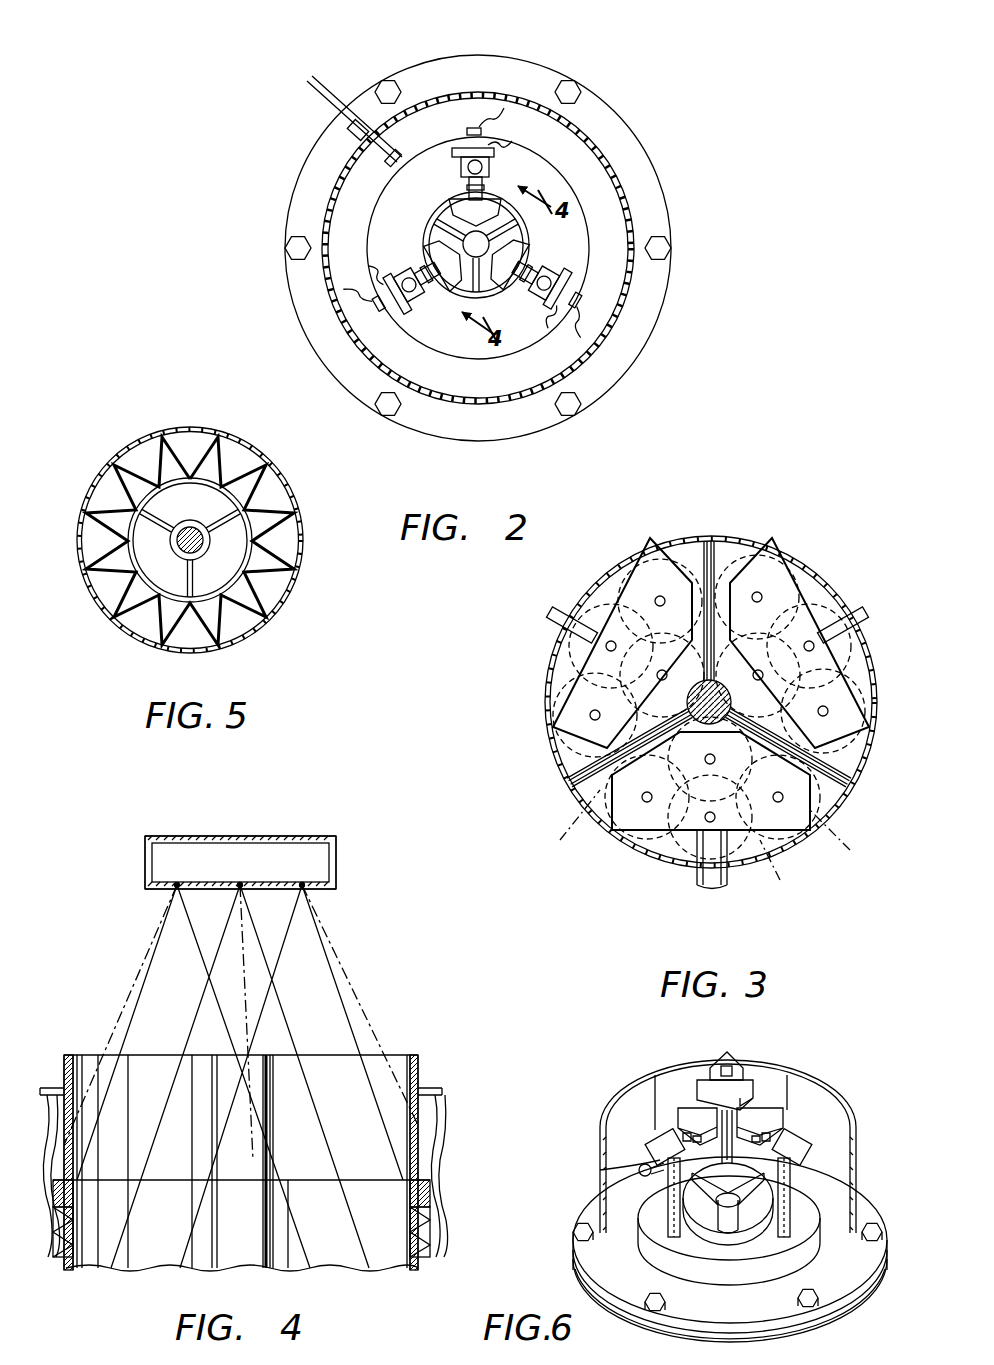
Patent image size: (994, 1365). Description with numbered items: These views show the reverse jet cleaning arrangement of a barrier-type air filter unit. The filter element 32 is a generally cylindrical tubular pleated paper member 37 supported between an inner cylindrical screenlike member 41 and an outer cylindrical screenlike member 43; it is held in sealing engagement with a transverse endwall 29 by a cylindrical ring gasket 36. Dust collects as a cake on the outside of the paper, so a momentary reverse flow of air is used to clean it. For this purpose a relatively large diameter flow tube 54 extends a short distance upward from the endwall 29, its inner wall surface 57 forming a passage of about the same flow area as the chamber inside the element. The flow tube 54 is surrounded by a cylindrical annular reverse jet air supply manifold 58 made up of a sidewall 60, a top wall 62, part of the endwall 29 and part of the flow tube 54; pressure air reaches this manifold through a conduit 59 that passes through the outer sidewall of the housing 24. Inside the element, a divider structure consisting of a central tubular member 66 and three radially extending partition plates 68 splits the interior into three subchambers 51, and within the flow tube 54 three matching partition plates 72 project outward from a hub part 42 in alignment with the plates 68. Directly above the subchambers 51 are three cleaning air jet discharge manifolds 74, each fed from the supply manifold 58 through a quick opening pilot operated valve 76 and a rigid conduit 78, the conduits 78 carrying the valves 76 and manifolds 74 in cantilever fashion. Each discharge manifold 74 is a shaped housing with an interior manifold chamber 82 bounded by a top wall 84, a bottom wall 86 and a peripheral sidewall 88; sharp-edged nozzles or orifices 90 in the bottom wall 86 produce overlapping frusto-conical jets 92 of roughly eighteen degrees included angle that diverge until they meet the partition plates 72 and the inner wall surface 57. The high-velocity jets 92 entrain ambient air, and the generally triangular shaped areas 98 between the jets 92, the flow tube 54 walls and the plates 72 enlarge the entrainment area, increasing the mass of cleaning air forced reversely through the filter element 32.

In FIG. 2, the housing 24 is at (468, 84).
In FIG. 6, the housing 24 is at (600, 1135).
In FIG. 4, the transverse endwall 29 is at (428, 1120).
In FIG. 6, the transverse endwall 29 is at (868, 1248).
In FIG. 5, the filter element 32 is at (122, 640).
In FIG. 4, the filter element 32 is at (440, 1232).
In FIG. 4, the cylindrical ring gasket 36 is at (440, 1190).
In FIG. 5, the pleated paper member 37 is at (288, 508).
In FIG. 5, the inner cylindrical screenlike member 41 is at (84, 555).
In FIG. 4, the inner cylindrical screenlike member 41 is at (82, 1258).
In FIG. 2, the hub part 42 is at (520, 285).
In FIG. 3, the hub part 42 is at (742, 700).
In FIG. 4, the hub part 42 is at (278, 1065).
In FIG. 6, the hub part 42 is at (732, 1230).
In FIG. 5, the outer cylindrical screenlike member 43 is at (262, 600).
In FIG. 2, the subchambers 51 is at (440, 232).
In FIG. 5, the subchambers 51 is at (204, 516).
In FIG. 2, the flow tube 54 is at (450, 205).
In FIG. 3, the flow tube 54 is at (592, 830).
In FIG. 4, the flow tube 54 is at (420, 1060).
In FIG. 6, the flow tube 54 is at (790, 1215).
In FIG. 2, the inner wall surface (bore) 57 is at (490, 256).
In FIG. 2, the reverse jet air supply manifold 58 is at (560, 154).
In FIG. 6, the reverse jet air supply manifold 58 is at (620, 1222).
In FIG. 2, the conduit 59 is at (340, 80).
In FIG. 6, the sidewall 60 is at (845, 1210).
In FIG. 2, the top wall 62 is at (380, 215).
In FIG. 5, the central tubular member 66 is at (262, 580).
In FIG. 4, the central tubular member 66 is at (288, 1258).
In FIG. 5, the partition plates 68 is at (230, 445).
In FIG. 4, the partition plates 68 is at (110, 1258).
In FIG. 2, the partition plates 72 is at (515, 208).
In FIG. 3, the partition plates 72 is at (712, 560).
In FIG. 4, the partition plates 72 is at (172, 1058).
In FIG. 6, the partition plates 72 is at (718, 1232).
In FIG. 2, the cleaning air jet discharge manifolds 74 is at (462, 150).
In FIG. 3, the cleaning air jet discharge manifolds 74 is at (660, 580).
In FIG. 4, the cleaning air jet discharge manifolds 74 is at (305, 834).
In FIG. 6, the cleaning air jet discharge manifolds 74 is at (690, 1108).
In FIG. 6, the pilot operated valve 76 is at (720, 1050).
In FIG. 6, the conduits 78 is at (740, 1075).
In FIG. 4, the interior manifold chamber 82 is at (260, 870).
In FIG. 4, the top wall 84 is at (205, 834).
In FIG. 4, the bottom wall 86 is at (150, 890).
In FIG. 4, the peripheral sidewall 88 is at (145, 862).
In FIG. 3, the nozzles or orifices 90 is at (655, 601).
In FIG. 4, the nozzles or orifices 90 is at (180, 890).
In FIG. 3, the jets 92 is at (620, 845).
In FIG. 4, the jets 92 is at (140, 972).
In FIG. 3, the triangular shaped areas 98 is at (862, 712).
In FIG. 4, the triangular shaped areas 98 is at (80, 1060).